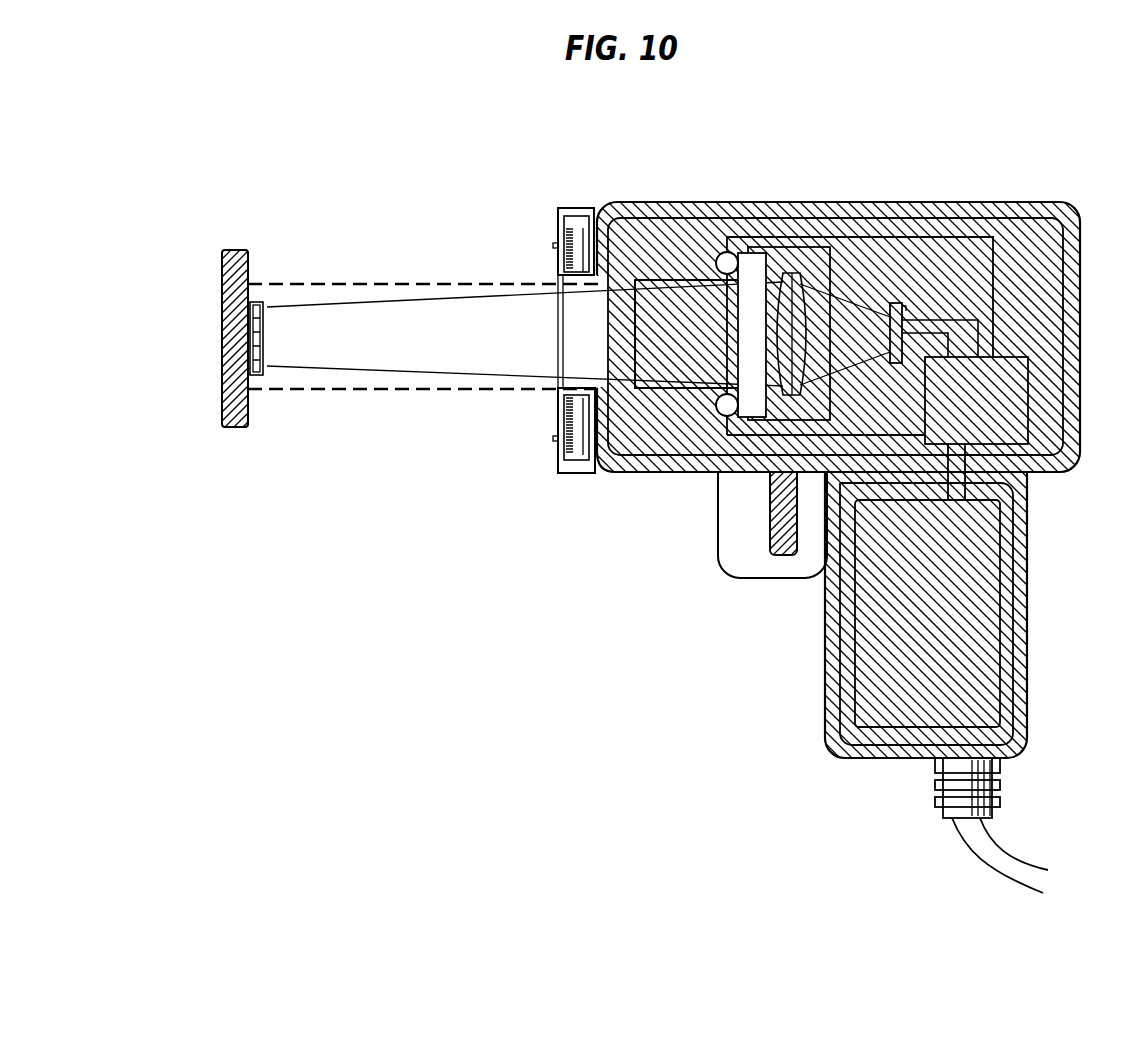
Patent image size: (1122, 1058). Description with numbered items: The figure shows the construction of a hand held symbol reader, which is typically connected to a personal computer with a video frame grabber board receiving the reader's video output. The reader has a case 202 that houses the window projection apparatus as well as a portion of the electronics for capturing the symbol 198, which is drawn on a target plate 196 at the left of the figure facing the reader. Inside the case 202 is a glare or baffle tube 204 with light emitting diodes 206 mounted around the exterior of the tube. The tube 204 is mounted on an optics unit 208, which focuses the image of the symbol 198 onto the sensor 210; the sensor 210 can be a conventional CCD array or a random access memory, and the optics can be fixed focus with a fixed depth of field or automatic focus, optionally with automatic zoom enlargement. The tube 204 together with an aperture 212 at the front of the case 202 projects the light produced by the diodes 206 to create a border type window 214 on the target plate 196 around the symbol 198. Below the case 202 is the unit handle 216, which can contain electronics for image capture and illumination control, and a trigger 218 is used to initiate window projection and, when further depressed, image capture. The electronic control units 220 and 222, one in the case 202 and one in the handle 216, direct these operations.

The substrate 196 is at (222, 275).
The border type window 214 is at (252, 282).
The symbol 198 is at (265, 338).
The aperture 212 is at (553, 245).
The case 202 is at (750, 200).
The glare or baffle tube 204 is at (646, 280).
The light emitting diodes 206 is at (716, 255).
The optics unit 208 is at (832, 268).
The sensor 210 is at (896, 362).
The electronic control unit 220 is at (1004, 356).
The trigger 218 is at (770, 520).
The unit handle 216 is at (1028, 632).
The electronic control unit 222 is at (853, 678).